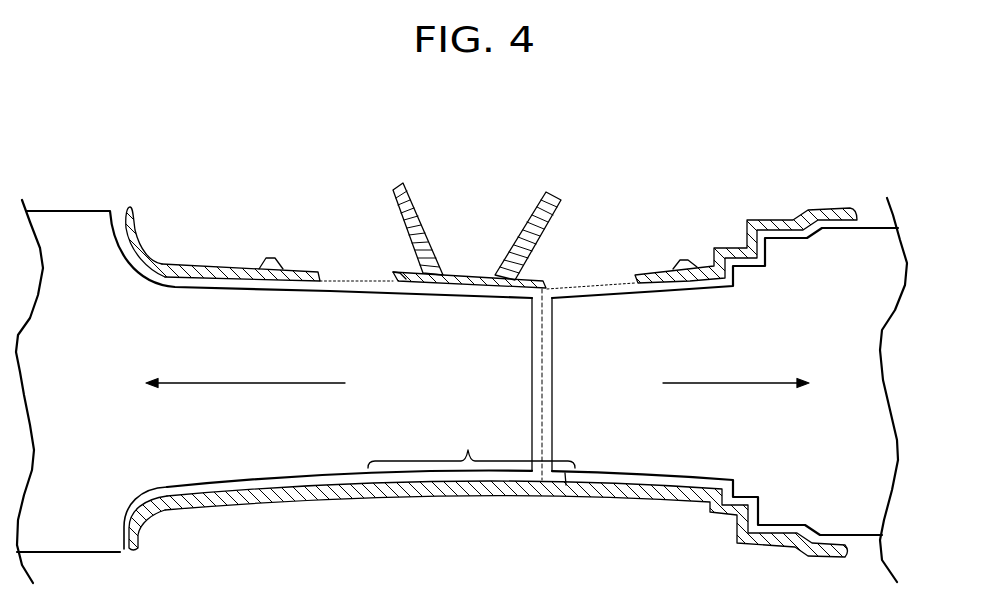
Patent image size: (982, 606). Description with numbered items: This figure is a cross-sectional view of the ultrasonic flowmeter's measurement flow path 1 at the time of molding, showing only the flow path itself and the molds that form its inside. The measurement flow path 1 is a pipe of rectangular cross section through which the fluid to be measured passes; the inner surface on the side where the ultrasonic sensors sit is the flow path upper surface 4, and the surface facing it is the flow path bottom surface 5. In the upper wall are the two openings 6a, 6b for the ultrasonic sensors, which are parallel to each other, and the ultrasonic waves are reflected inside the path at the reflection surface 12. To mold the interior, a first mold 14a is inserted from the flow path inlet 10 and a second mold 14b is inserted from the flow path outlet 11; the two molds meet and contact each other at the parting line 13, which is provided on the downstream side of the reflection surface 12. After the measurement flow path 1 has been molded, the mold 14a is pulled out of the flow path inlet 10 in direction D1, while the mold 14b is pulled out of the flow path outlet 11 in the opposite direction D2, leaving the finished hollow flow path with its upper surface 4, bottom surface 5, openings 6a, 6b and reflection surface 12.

The measurement flow path 1 is at (232, 508).
The flow path upper surface 4 is at (173, 283).
The flow path bottom surface 5 is at (173, 490).
The opening 6a is at (370, 260).
The opening 6b is at (587, 252).
The flow path inlet 10 is at (208, 263).
The flow path outlet 11 is at (792, 222).
The reflection surface 12 is at (471, 441).
The parting line 13 is at (548, 425).
The mold 14a is at (340, 425).
The mold 14b is at (650, 423).
The direction D1 is at (252, 381).
The direction D2 is at (728, 381).